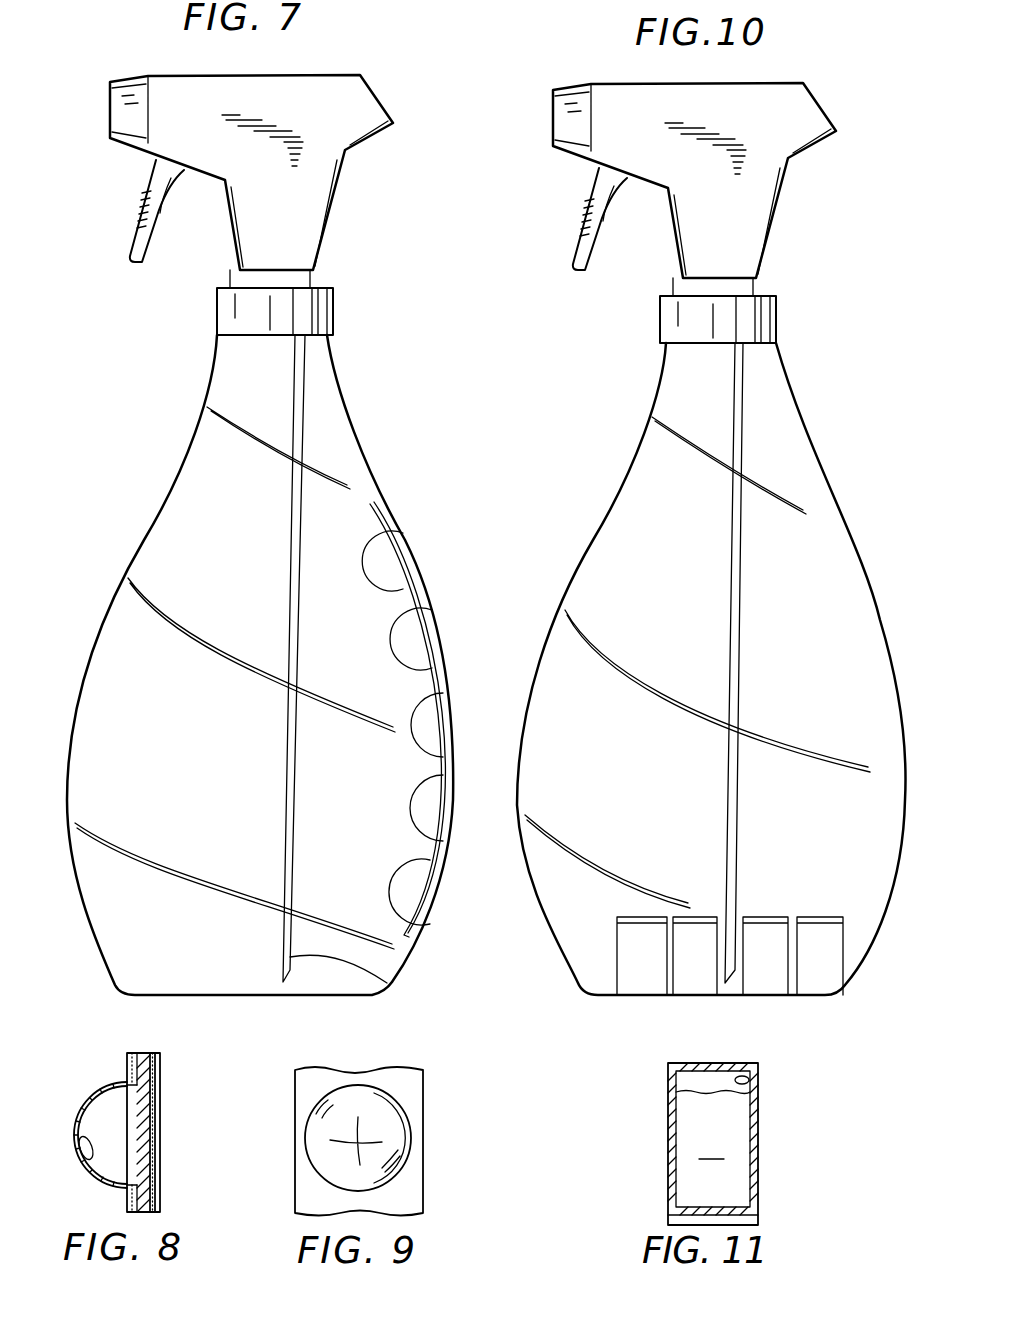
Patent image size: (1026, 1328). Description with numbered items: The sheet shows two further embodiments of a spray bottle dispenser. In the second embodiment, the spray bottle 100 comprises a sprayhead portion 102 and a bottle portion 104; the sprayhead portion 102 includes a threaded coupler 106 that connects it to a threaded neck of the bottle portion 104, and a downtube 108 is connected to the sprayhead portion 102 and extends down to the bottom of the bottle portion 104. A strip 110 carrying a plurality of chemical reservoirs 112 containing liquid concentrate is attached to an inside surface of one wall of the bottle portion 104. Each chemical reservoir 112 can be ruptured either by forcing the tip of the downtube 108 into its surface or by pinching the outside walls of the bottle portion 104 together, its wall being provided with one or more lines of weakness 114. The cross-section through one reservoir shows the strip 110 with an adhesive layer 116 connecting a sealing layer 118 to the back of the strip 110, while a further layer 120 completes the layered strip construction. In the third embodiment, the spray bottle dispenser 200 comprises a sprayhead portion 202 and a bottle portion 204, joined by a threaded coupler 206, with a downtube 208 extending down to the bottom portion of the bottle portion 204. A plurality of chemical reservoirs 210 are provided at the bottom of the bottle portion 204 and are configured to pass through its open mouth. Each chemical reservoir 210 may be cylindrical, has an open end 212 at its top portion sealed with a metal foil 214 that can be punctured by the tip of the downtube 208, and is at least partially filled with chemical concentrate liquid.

In FIG. 7, the spray bottle 100 is at (160, 450).
In FIG. 7, the sprayhead portion 102 is at (302, 222).
In FIG. 7, the bottle portion 104 is at (323, 412).
In FIG. 7, the threaded coupler 106 is at (305, 310).
In FIG. 7, the downtube 108 is at (390, 982).
In FIG. 7, the strip 110 is at (416, 590).
In FIG. 8, the strip 110 is at (148, 1123).
In FIG. 9, the strip 110 is at (399, 1129).
In FIG. 7, the chemical reservoir 112 is at (412, 712).
In FIG. 9, the chemical reservoir 112 is at (380, 1168).
In FIG. 8, the line of weakness 114 is at (83, 1167).
In FIG. 9, the line of weakness 114 is at (365, 1150).
In FIG. 8, the adhesive layer 116 is at (133, 1093).
In FIG. 8, the sealing layer 118 is at (148, 1133).
In FIG. 8, the outer layer 120 is at (153, 1172).
In FIG. 10, the spray bottle dispenser 200 is at (608, 430).
In FIG. 10, the sprayhead portion 202 is at (742, 220).
In FIG. 10, the bottle portion 204 is at (795, 475).
In FIG. 10, the threaded coupler 206 is at (747, 322).
In FIG. 10, the downtube 208 is at (737, 677).
In FIG. 10, the chemical reservoir 210 is at (680, 983).
In FIG. 11, the chemical reservoir 210 is at (765, 1144).
In FIG. 11, the open end 212 is at (748, 1079).
In FIG. 11, the metal foil 214 is at (762, 1072).